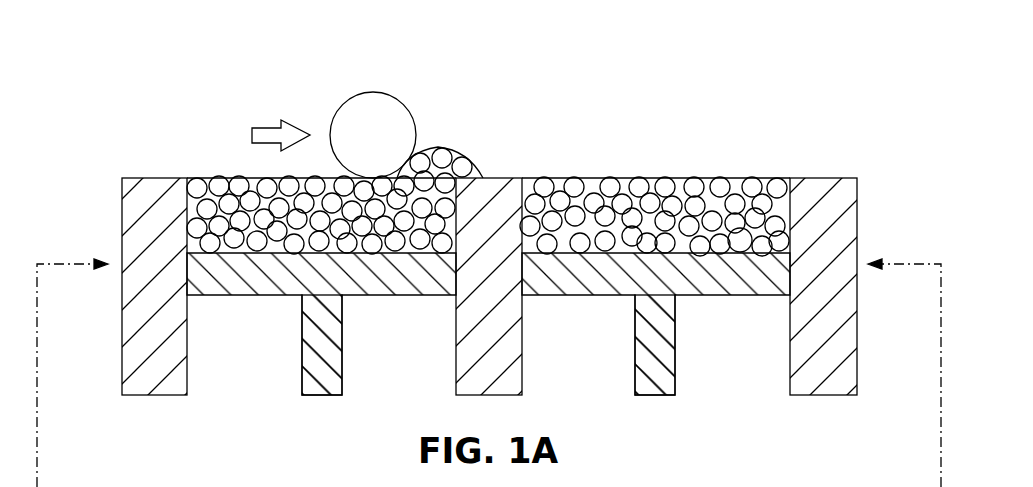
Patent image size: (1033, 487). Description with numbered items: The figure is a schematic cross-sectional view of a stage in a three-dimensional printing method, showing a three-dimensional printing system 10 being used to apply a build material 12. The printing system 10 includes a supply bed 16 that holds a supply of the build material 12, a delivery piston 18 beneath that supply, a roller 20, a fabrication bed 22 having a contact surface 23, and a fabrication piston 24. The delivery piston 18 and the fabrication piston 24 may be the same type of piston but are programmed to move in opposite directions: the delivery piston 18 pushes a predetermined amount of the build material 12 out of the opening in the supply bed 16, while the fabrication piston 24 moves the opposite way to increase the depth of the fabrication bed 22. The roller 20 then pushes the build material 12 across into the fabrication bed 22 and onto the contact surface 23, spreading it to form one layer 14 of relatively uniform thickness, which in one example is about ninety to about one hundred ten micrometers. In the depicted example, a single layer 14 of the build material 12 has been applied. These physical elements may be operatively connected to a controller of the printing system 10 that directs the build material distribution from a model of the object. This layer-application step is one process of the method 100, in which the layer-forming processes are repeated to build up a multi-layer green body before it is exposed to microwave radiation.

The 3D printing system 10 is at (172, 109).
The build material 12 is at (213, 192).
The layer 14 is at (792, 180).
The supply bed 16 is at (215, 205).
The delivery piston 18 is at (323, 370).
The roller 20 is at (370, 120).
The fabrication bed 22 is at (553, 222).
The contact surface 23 is at (755, 238).
The fabrication piston 24 is at (655, 360).
The method 100 is at (941, 486).